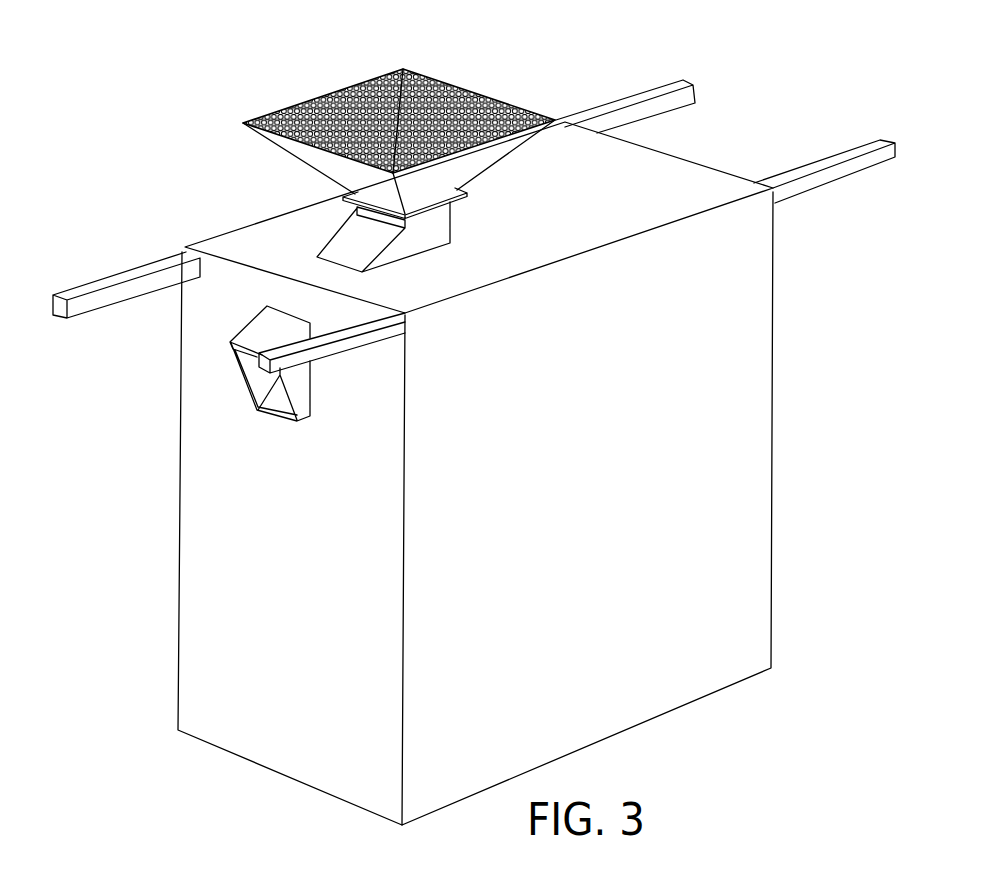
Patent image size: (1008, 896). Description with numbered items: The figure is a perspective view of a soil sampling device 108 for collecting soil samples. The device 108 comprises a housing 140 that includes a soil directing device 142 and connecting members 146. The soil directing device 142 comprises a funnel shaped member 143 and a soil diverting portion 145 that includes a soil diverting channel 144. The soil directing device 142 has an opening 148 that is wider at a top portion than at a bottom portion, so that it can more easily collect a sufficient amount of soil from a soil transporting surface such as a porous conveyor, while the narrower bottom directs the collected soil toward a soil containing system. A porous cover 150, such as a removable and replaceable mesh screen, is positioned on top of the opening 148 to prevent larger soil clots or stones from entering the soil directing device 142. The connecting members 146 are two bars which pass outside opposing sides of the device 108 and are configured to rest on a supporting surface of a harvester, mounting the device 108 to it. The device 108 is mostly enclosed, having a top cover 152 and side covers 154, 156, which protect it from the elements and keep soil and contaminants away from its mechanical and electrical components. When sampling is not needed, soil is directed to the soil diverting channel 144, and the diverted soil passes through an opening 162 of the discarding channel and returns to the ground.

The soil sampling device 108 is at (209, 96).
The housing 140 is at (773, 323).
The soil directing device 142 is at (467, 172).
The funnel shaped member 143 is at (317, 160).
The soil diverting channel 144 is at (258, 332).
The soil diverting portion 145 is at (438, 223).
The connecting members 146 is at (608, 110).
The opening 148 is at (417, 127).
The porous cover 150 is at (327, 117).
The top cover 152 is at (635, 193).
The side cover 154 is at (748, 555).
The side cover 156 is at (200, 638).
The opening 162 is at (258, 383).